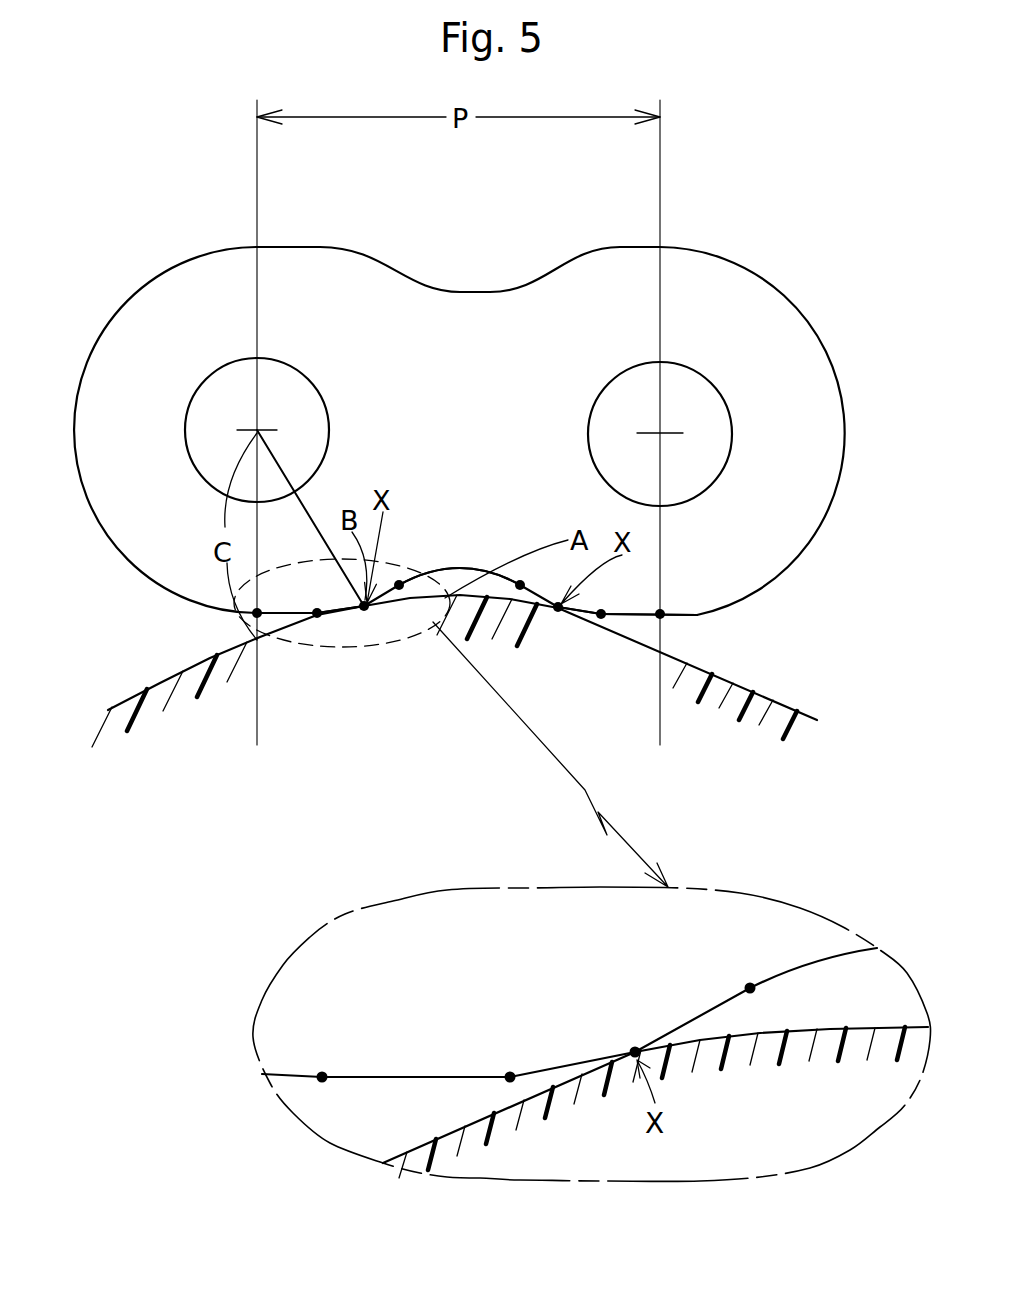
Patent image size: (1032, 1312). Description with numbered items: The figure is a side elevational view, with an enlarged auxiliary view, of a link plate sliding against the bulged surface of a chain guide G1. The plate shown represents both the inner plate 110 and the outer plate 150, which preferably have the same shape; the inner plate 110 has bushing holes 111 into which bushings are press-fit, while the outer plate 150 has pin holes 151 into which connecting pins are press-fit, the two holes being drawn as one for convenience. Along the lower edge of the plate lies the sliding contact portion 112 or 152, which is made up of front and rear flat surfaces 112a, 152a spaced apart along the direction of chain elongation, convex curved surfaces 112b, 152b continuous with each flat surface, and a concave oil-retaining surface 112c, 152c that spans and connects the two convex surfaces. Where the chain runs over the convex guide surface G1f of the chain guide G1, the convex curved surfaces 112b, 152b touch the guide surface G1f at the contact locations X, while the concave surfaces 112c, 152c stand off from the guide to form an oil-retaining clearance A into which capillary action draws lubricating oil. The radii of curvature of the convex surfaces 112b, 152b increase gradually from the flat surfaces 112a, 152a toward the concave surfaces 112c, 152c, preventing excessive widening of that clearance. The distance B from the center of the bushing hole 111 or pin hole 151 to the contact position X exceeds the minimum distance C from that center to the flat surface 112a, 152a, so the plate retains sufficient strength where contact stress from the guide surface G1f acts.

The inner plate 110 is at (459, 409).
The outer plate 150 is at (181, 281).
The bushing hole 111 is at (436, 364).
The pin hole 151 is at (205, 390).
The sliding contact portion 112 is at (504, 624).
The sliding contact portion 152 is at (660, 237).
The flat surface 112a is at (477, 845).
The flat surface 152a is at (316, 622).
The convex curved surface 112b is at (533, 841).
The convex curved surface 152b is at (533, 841).
The oil-retaining concave surface 112c is at (638, 747).
The oil-retaining concave surface 152c is at (638, 747).
The chain guide G1 is at (226, 740).
The convex guide surface G1f is at (128, 705).